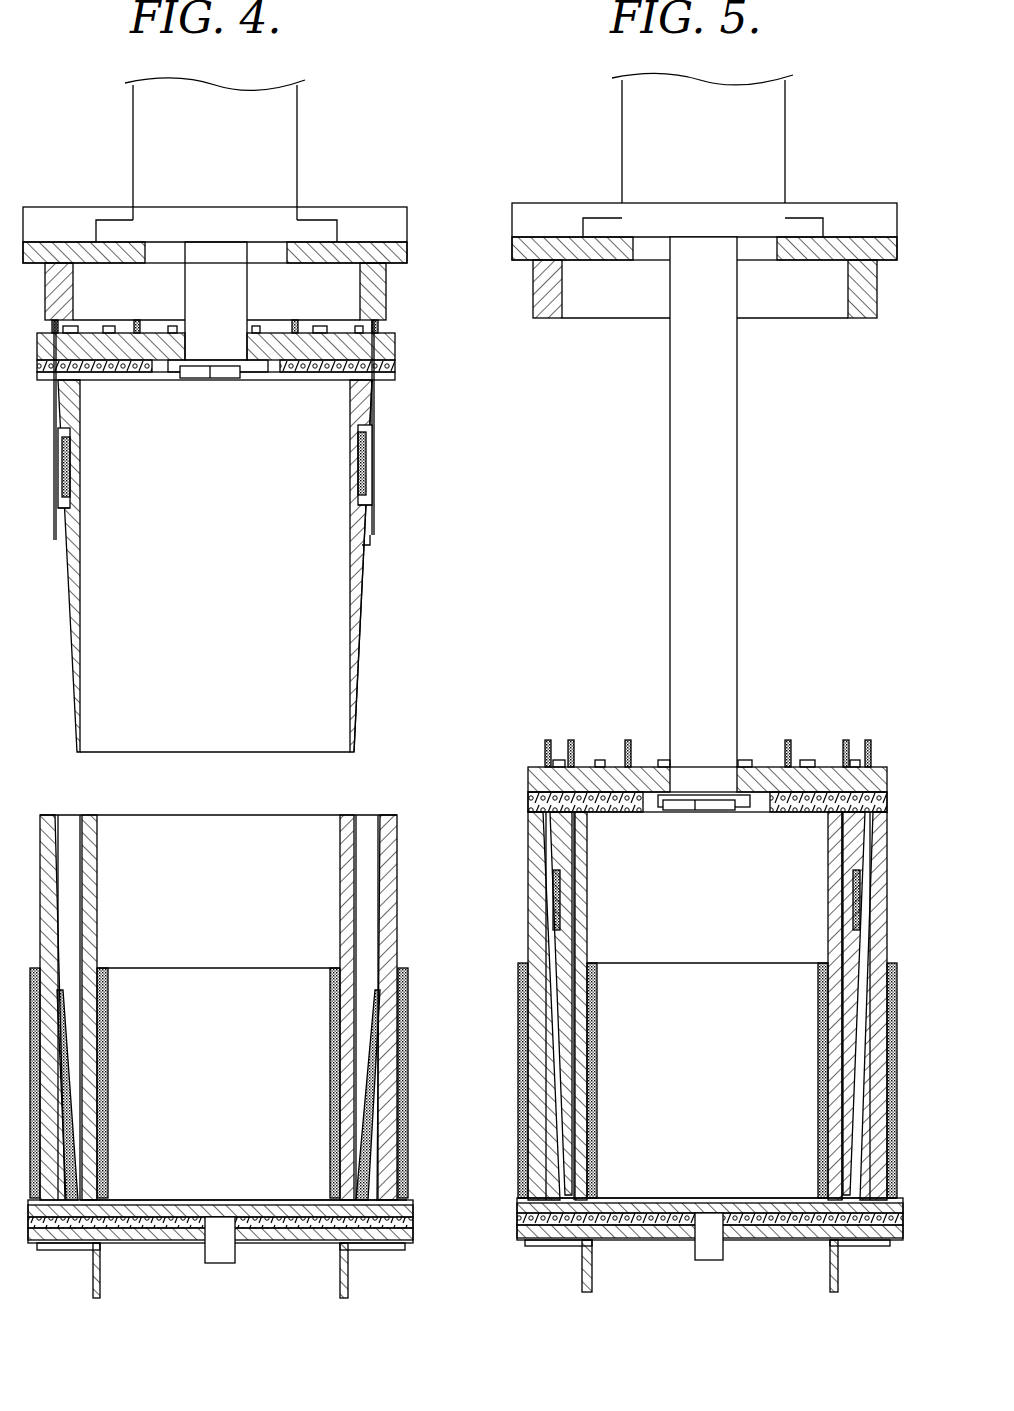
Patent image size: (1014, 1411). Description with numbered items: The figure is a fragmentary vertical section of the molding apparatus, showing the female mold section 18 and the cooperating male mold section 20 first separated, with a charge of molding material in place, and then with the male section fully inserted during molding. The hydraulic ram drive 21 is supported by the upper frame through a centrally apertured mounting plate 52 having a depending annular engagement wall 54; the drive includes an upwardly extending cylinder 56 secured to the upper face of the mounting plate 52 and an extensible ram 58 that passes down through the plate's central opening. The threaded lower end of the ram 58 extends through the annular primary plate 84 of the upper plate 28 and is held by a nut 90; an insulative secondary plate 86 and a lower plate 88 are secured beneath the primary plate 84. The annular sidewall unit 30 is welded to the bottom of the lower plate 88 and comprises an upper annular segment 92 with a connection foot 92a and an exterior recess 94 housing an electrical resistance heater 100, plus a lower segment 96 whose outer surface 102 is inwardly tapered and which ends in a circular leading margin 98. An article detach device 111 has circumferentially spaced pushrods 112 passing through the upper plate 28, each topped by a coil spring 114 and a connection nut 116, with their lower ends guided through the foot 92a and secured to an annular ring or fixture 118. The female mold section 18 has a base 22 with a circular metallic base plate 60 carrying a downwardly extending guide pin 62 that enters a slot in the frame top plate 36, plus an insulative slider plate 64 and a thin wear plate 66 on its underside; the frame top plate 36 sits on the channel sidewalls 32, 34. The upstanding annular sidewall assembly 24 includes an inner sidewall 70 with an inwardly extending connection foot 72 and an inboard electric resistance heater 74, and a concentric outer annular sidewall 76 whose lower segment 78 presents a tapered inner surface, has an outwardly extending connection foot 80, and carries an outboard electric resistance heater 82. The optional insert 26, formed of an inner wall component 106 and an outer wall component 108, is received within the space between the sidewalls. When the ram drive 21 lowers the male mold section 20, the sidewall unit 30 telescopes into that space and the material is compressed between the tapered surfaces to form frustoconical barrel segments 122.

In FIG. 4, the female mold section 18 is at (253, 1032).
In FIG. 5, the female mold section 18 is at (675, 1053).
In FIG. 4, the male mold section 20 is at (256, 531).
In FIG. 5, the male mold section 20 is at (680, 922).
In FIG. 4, the hydraulic ram drive 21 is at (233, 217).
In FIG. 5, the hydraulic ram drive 21 is at (707, 420).
In FIG. 4, the base 22 is at (253, 1220).
In FIG. 5, the base 22 is at (710, 1208).
In FIG. 4, the annular sidewall assembly 24 is at (240, 981).
In FIG. 5, the annular sidewall assembly 24 is at (687, 1006).
In FIG. 4, the insert 26 is at (62, 796).
In FIG. 4, the upper plate 28 is at (265, 367).
In FIG. 5, the upper plate 28 is at (682, 756).
In FIG. 4, the annular sidewall unit 30 is at (276, 566).
In FIG. 5, the annular sidewall unit 30 is at (707, 1003).
In FIG. 4, the channel sidewall 32 is at (349, 1275).
In FIG. 5, the channel sidewall 32 is at (839, 1273).
In FIG. 4, the channel sidewall 34 is at (93, 1280).
In FIG. 5, the channel sidewall 34 is at (582, 1272).
In FIG. 4, the frame top plate 36 is at (316, 1235).
In FIG. 5, the frame top plate 36 is at (645, 1232).
In FIG. 4, the mounting plate 52 is at (62, 240).
In FIG. 5, the mounting plate 52 is at (545, 235).
In FIG. 4, the engagement wall 54 is at (383, 280).
In FIG. 5, the engagement wall 54 is at (870, 300).
In FIG. 4, the cylinder 56 is at (292, 102).
In FIG. 5, the cylinder 56 is at (622, 106).
In FIG. 5, the ram 58 is at (737, 500).
In FIG. 4, the base plate 60 is at (260, 1205).
In FIG. 5, the base plate 60 is at (683, 1205).
In FIG. 4, the guide pin 62 is at (222, 1258).
In FIG. 5, the guide pin 62 is at (722, 1248).
In FIG. 4, the slider plate 64 is at (190, 1216).
In FIG. 5, the slider plate 64 is at (750, 1210).
In FIG. 4, the wear plate 66 is at (165, 1230).
In FIG. 5, the wear plate 66 is at (788, 1230).
In FIG. 4, the inner sidewall 70 is at (92, 935).
In FIG. 5, the inner sidewall 70 is at (836, 900).
In FIG. 4, the connection foot 72 is at (118, 1200).
In FIG. 5, the connection foot 72 is at (610, 1195).
In FIG. 4, the inboard electric resistance heater 74 is at (200, 982).
In FIG. 5, the inboard electric resistance heater 74 is at (725, 975).
In FIG. 4, the outer annular sidewall 76 is at (392, 878).
In FIG. 5, the outer annular sidewall 76 is at (532, 905).
In FIG. 4, the lower segment 78 is at (388, 1050).
In FIG. 5, the lower segment 78 is at (540, 1100).
In FIG. 4, the connection foot 80 is at (415, 1200).
In FIG. 5, the connection foot 80 is at (520, 1198).
In FIG. 4, the outboard electric resistance heater 82 is at (410, 978).
In FIG. 5, the outboard electric resistance heater 82 is at (518, 1020).
In FIG. 4, the primary plate 84 is at (395, 340).
In FIG. 5, the primary plate 84 is at (588, 770).
In FIG. 4, the secondary plate 86 is at (118, 378).
In FIG. 5, the secondary plate 86 is at (530, 802).
In FIG. 4, the lower plate 88 is at (310, 378).
In FIG. 5, the lower plate 88 is at (632, 805).
In FIG. 4, the nut 90 is at (215, 374).
In FIG. 5, the nut 90 is at (712, 810).
In FIG. 4, the upper annular segment 92 is at (72, 478).
In FIG. 5, the upper annular segment 92 is at (706, 900).
In FIG. 4, the connection foot 92a is at (372, 520).
In FIG. 4, the recess 94 is at (66, 505).
In FIG. 4, the lower segment 96 is at (355, 632).
In FIG. 4, the leading margin 98 is at (362, 752).
In FIG. 4, the electrical resistance heater 100 is at (366, 462).
In FIG. 4, the outer surface 102 is at (360, 678).
In FIG. 4, the inner wall component 106 is at (97, 825).
In FIG. 5, the inner wall component 106 is at (708, 1006).
In FIG. 4, the outer wall component 108 is at (57, 878).
In FIG. 5, the outer wall component 108 is at (708, 1006).
In FIG. 4, the article detach device 111 is at (398, 538).
In FIG. 4, the pushrods 112 is at (375, 425).
In FIG. 4, the coil spring 114 is at (213, 329).
In FIG. 5, the coil spring 114 is at (794, 757).
In FIG. 4, the connection nut 116 is at (215, 326).
In FIG. 5, the connection nut 116 is at (788, 745).
In FIG. 4, the annular ring or fixture 118 is at (376, 550).
In FIG. 4, the frustoconical barrel segments 122 is at (80, 1058).